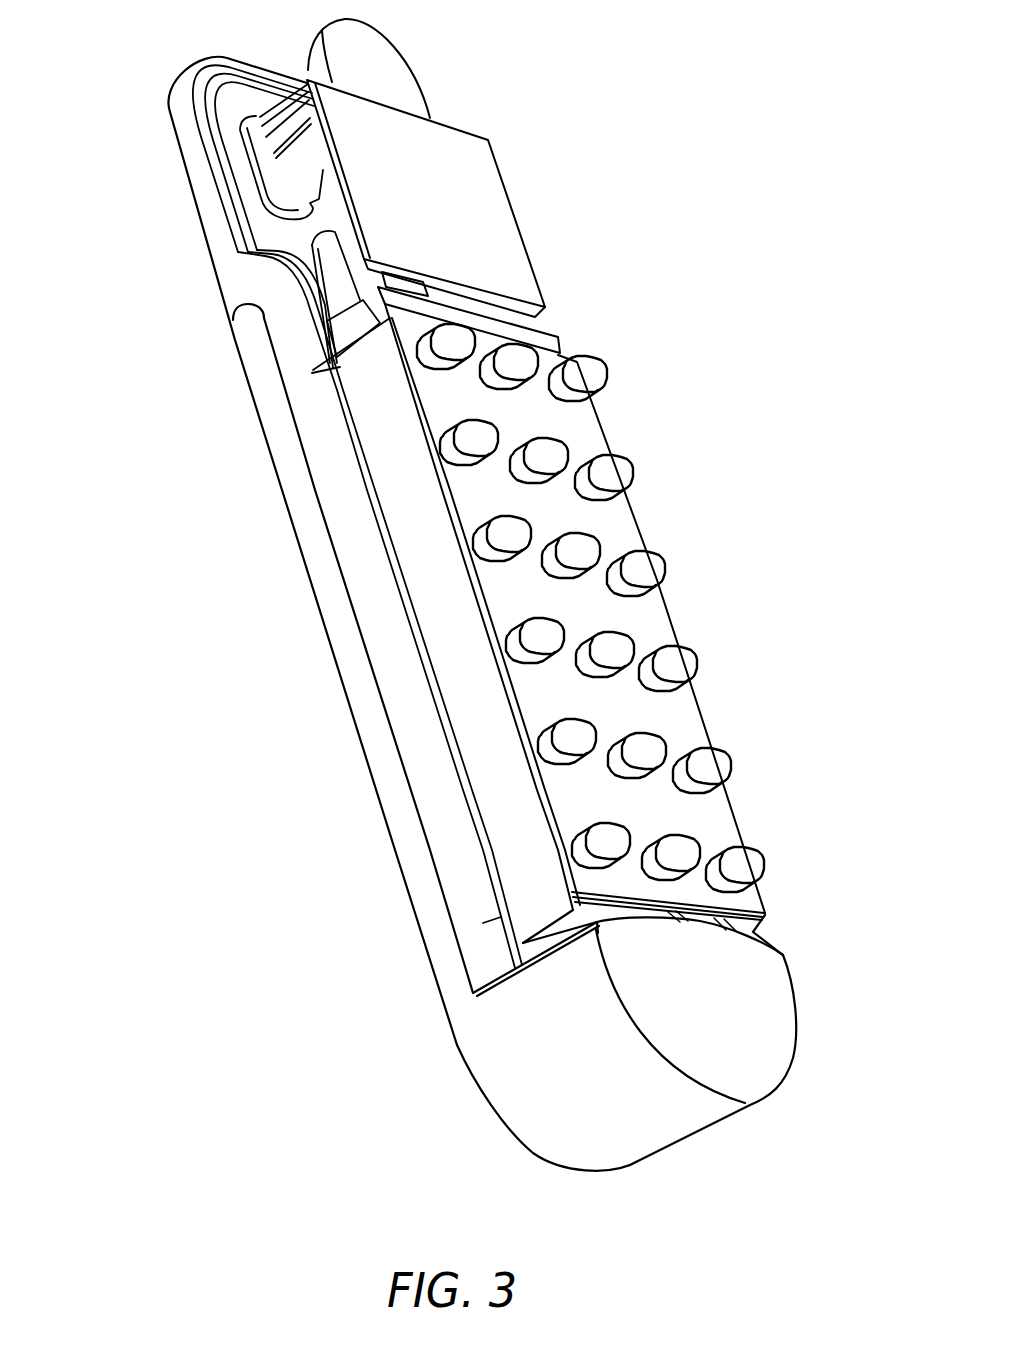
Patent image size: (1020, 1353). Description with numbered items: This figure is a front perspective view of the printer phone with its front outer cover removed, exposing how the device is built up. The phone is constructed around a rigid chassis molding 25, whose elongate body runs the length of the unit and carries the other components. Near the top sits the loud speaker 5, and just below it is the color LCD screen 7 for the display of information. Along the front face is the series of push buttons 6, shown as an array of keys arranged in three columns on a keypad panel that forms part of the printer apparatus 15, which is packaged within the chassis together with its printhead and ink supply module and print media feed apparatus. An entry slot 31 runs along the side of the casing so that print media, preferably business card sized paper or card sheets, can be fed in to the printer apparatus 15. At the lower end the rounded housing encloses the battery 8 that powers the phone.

The loud speaker 5 is at (383, 80).
The push buttons 6 is at (620, 465).
The LCD screen 7 is at (487, 230).
The battery 8 is at (497, 1048).
The printer apparatus 15 is at (476, 712).
The chassis molding 25 is at (238, 283).
The entry slot 31 is at (334, 599).